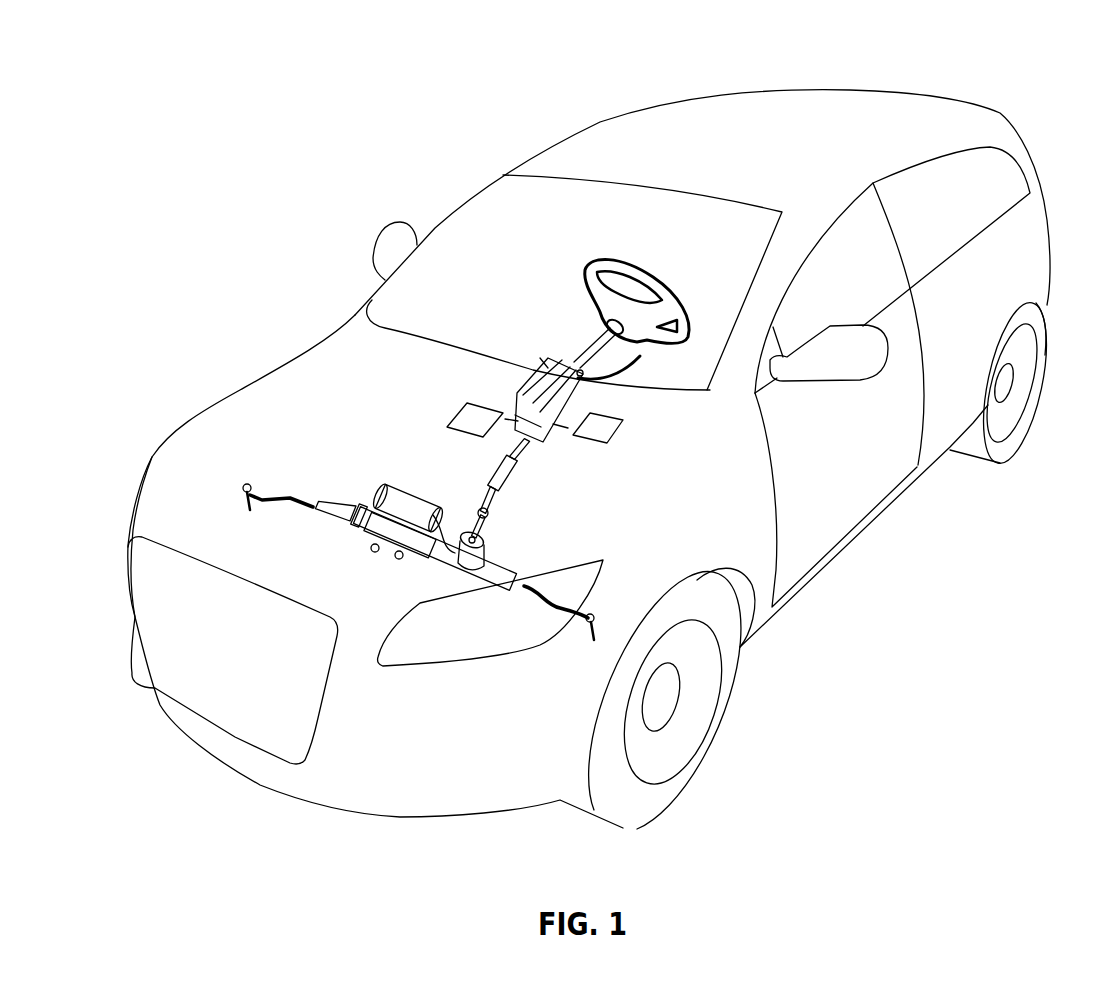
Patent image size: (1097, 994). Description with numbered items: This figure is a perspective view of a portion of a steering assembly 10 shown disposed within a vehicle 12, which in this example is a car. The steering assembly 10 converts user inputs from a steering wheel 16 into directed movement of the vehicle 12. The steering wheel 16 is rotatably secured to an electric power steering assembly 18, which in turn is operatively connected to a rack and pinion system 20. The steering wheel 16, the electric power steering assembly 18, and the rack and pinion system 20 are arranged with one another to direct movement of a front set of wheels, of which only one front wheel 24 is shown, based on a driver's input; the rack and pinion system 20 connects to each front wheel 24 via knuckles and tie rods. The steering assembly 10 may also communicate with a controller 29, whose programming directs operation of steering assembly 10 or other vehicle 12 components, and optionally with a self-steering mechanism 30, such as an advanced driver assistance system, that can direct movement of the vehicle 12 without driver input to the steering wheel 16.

The steering assembly 10 is at (466, 415).
The vehicle 12 is at (602, 456).
The steering wheel 16 is at (596, 262).
The electric power steering assembly 18 is at (549, 439).
The rack and pinion system 20 is at (521, 563).
The front wheel 24 is at (643, 826).
The controller 29 is at (455, 422).
The self-steering mechanism 30 is at (610, 437).